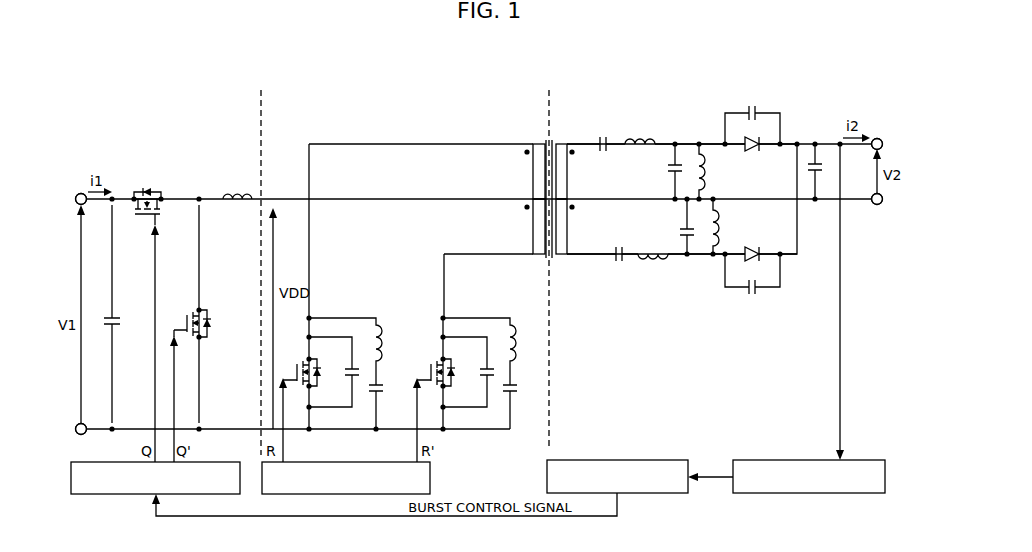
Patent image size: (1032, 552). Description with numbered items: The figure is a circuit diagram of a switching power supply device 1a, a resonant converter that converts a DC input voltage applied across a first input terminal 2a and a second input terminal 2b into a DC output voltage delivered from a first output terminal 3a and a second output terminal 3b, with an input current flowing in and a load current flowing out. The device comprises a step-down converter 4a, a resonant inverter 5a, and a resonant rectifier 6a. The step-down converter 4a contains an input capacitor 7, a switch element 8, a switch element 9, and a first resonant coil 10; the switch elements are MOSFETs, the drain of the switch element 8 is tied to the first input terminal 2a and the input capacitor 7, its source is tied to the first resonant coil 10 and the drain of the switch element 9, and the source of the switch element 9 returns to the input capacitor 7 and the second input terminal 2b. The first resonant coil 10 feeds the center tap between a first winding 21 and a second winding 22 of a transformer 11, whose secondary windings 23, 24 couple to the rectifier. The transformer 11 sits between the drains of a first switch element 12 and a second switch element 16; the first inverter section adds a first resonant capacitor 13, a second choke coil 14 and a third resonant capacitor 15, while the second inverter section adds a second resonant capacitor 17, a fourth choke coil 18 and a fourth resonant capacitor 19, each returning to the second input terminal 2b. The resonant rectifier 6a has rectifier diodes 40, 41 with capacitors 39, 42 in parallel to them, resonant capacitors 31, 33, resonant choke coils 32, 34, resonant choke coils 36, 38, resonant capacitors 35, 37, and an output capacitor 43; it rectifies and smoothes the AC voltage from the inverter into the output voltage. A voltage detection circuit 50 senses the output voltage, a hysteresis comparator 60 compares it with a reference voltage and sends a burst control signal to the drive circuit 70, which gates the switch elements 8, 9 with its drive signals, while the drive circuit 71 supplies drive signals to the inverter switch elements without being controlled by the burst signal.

The switching power supply device 1a is at (537, 49).
The first input terminal 2a is at (79, 194).
The second input terminal 2b is at (80, 435).
The first output terminal 3a is at (880, 139).
The second output terminal 3b is at (880, 205).
The step-down converter 4a is at (181, 84).
The resonant inverter 5a is at (374, 84).
The resonant rectifier 6a is at (698, 84).
The input capacitor 7 is at (119, 322).
The switch element 8 is at (140, 220).
The switch element 9 is at (186, 314).
The first resonant coil 10 is at (237, 194).
The transformer 11 is at (538, 133).
The first switch element 12 is at (296, 363).
The first resonant capacitor 13 is at (348, 370).
The second choke coil 14 is at (377, 334).
The third resonant capacitor 15 is at (379, 385).
The second switch element 16 is at (430, 363).
The second resonant capacitor 17 is at (483, 370).
The fourth choke coil 18 is at (511, 334).
The fourth resonant capacitor 19 is at (515, 388).
The first winding 21 is at (533, 186).
The second winding 22 is at (533, 228).
The secondary winding 23 is at (567, 186).
The secondary winding 24 is at (567, 228).
The resonant capacitor 31 is at (603, 137).
The resonant choke coil 32 is at (640, 137).
The resonant capacitor 33 is at (619, 261).
The resonant choke coil 34 is at (653, 261).
The resonant capacitor 35 is at (668, 170).
The resonant choke coil 36 is at (702, 170).
The resonant capacitor 37 is at (680, 232).
The resonant choke coil 38 is at (716, 232).
The capacitor 39 is at (752, 106).
The rectifier diode 40 is at (753, 152).
The rectifier diode 41 is at (755, 246).
The capacitor 42 is at (753, 294).
The output capacitor 43 is at (819, 168).
The voltage detection circuit 50 is at (857, 460).
The hysteresis comparator 60 is at (666, 460).
The drive circuit 70 is at (217, 462).
The drive circuit 71 is at (379, 462).